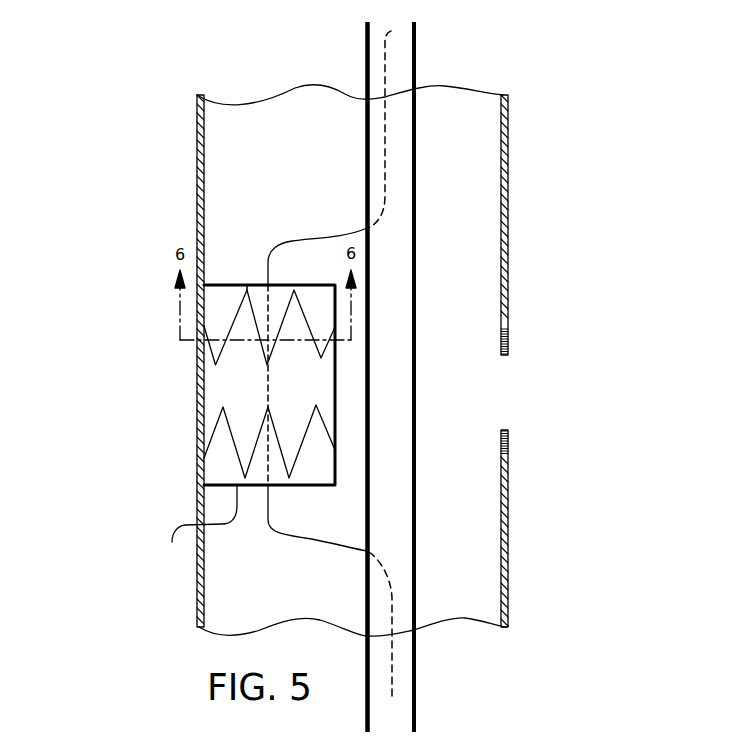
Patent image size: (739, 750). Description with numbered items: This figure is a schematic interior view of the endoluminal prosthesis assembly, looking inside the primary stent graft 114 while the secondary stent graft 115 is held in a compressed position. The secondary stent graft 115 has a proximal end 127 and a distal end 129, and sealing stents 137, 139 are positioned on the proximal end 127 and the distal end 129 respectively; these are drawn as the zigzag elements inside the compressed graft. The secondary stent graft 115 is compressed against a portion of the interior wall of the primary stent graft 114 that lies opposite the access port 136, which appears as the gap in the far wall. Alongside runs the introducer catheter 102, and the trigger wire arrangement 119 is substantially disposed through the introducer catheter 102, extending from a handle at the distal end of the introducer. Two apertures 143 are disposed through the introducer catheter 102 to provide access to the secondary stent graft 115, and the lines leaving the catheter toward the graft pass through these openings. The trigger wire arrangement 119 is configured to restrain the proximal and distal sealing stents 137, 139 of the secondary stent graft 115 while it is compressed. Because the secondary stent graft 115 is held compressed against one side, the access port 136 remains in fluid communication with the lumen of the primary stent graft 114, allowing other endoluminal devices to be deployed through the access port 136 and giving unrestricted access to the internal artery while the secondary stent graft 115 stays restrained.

The introducer catheter 102 is at (366, 48).
The primary stent graft 114 is at (507, 97).
The secondary stent graft 115 is at (223, 392).
The trigger wire arrangement 119 is at (317, 240).
The proximal end 127 is at (247, 284).
The distal end 129 is at (257, 530).
The access port 136 is at (508, 360).
The sealing stent 137 is at (202, 330).
The sealing stent 139 is at (212, 427).
The apertures 143 is at (367, 229).